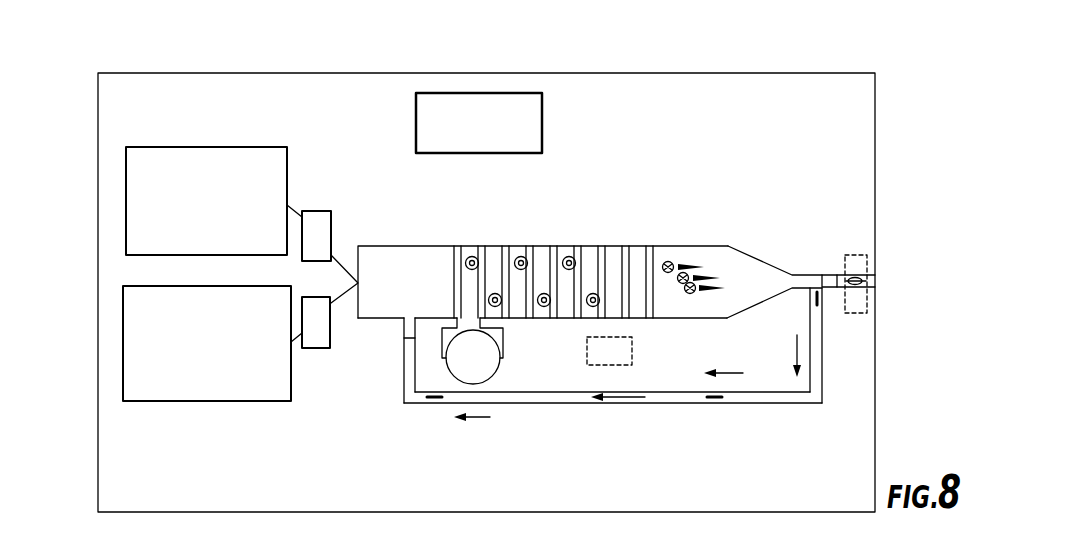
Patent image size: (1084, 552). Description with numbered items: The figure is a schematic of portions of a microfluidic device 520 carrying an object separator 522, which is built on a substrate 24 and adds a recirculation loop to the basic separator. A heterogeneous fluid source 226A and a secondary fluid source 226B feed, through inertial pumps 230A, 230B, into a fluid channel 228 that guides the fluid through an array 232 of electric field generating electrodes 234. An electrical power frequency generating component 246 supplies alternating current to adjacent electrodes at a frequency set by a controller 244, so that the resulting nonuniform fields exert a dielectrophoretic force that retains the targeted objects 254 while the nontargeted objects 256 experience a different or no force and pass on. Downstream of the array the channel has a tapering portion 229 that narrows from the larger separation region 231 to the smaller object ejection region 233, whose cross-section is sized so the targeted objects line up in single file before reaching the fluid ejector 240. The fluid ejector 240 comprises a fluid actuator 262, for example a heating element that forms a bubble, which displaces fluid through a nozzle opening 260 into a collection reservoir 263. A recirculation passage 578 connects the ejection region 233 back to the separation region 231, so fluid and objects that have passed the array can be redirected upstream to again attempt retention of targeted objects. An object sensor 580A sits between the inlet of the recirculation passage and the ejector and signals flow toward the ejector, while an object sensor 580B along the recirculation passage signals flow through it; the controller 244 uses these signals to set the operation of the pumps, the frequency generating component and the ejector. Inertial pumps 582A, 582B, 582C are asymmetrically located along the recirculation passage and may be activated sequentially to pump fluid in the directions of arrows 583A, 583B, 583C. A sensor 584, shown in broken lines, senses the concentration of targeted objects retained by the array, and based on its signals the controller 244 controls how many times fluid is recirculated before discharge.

The microfluidic device 520 is at (113, 45).
The object separator 522 is at (778, 30).
The substrate 24 is at (808, 73).
The controller 244 is at (543, 122).
The fluid source 226A is at (232, 147).
The fluid source 226B is at (177, 401).
The inertial pump 230A is at (314, 211).
The inertial pump 230B is at (313, 348).
The fluid channel 228 is at (343, 295).
The array of electric field generating electrodes 232 is at (556, 238).
The electric field generating electrode 234 is at (462, 248).
The targeted objects 254 is at (474, 256).
The nontargeted objects 256 is at (668, 261).
The tapering portion 229 is at (760, 260).
The separation region 231 is at (676, 318).
The object sensor 580A is at (830, 275).
The fluid ejector 240 is at (860, 268).
The fluid actuator 262 is at (862, 285).
The nozzle opening 260 is at (855, 290).
The collection reservoir 263 is at (852, 313).
The object ejection region 233 is at (803, 290).
The inertial pump 582A is at (818, 306).
The object sensor 580B is at (404, 343).
The recirculation passage 578 is at (550, 404).
The electrical power frequency generating component 246 is at (503, 362).
The sensor 584 is at (633, 350).
The inertial pump 582B is at (713, 400).
The inertial pump 582C is at (432, 400).
The arrow 583A is at (798, 347).
The arrow 583B is at (730, 377).
The arrow 583C is at (478, 422).